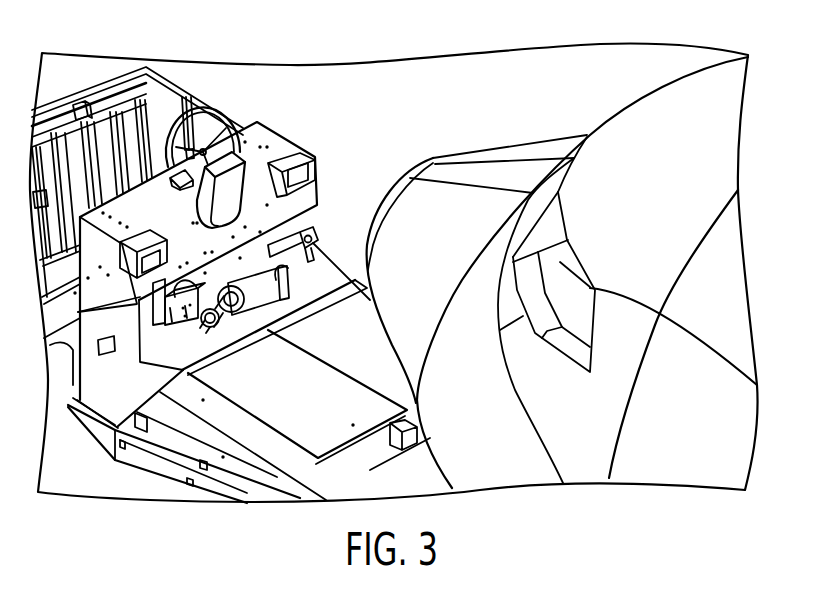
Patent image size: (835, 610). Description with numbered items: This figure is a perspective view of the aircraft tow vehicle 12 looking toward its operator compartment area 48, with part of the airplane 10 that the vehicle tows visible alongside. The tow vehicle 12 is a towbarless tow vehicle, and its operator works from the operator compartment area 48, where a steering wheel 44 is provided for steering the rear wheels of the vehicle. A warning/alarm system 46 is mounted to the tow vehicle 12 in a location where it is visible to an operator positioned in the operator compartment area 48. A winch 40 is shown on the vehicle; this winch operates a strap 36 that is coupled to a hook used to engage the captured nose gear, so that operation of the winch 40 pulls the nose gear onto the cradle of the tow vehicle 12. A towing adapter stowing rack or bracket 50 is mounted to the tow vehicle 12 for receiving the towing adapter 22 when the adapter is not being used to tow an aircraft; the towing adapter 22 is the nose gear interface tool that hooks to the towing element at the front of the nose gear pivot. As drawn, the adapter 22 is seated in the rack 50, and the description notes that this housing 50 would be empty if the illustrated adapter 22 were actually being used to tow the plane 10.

The airplane 10 is at (545, 132).
The aircraft tow vehicle 12 is at (125, 482).
The towing adapter 22 is at (153, 309).
The strap 36 is at (307, 345).
The winch 40 is at (292, 314).
The steering wheel 44 is at (210, 108).
The warning/alarm system 46 is at (233, 156).
The operator compartment area 48 is at (135, 145).
The towing adapter stowing rack 50 is at (173, 318).